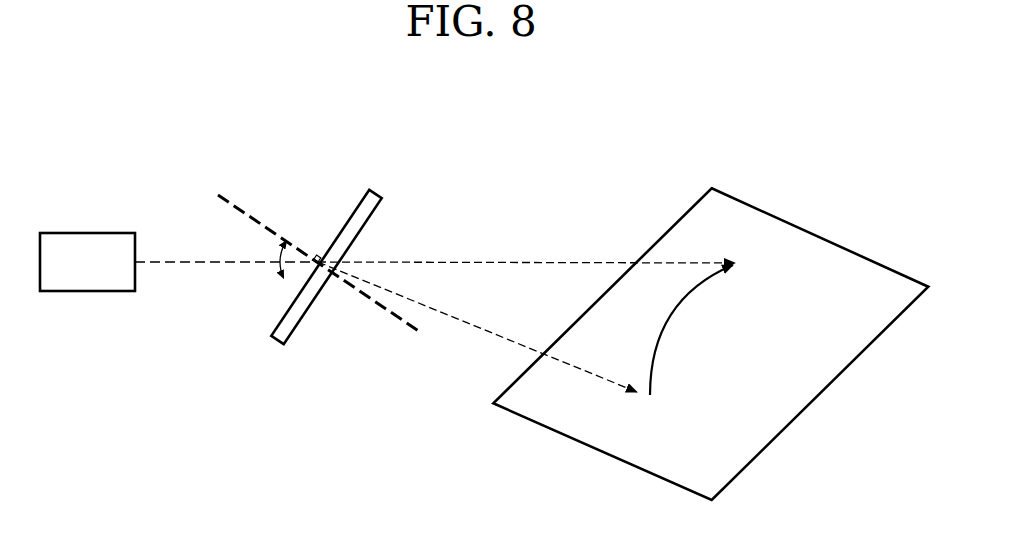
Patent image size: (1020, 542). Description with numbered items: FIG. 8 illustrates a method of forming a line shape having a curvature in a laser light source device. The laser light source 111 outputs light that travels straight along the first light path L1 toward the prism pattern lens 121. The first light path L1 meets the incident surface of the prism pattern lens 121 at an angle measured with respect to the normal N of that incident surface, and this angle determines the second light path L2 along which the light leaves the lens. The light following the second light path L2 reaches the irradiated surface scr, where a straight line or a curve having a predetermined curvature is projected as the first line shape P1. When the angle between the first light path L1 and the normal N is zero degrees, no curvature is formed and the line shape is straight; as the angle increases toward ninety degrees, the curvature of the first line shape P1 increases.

The laser light source 111 is at (86, 232).
The prism pattern lens 121 is at (345, 222).
The normal N is at (376, 298).
The first light path L1 is at (435, 249).
The second light path L2 is at (477, 327).
The first line shape P1 is at (691, 330).
The irradiated surface scr is at (783, 428).